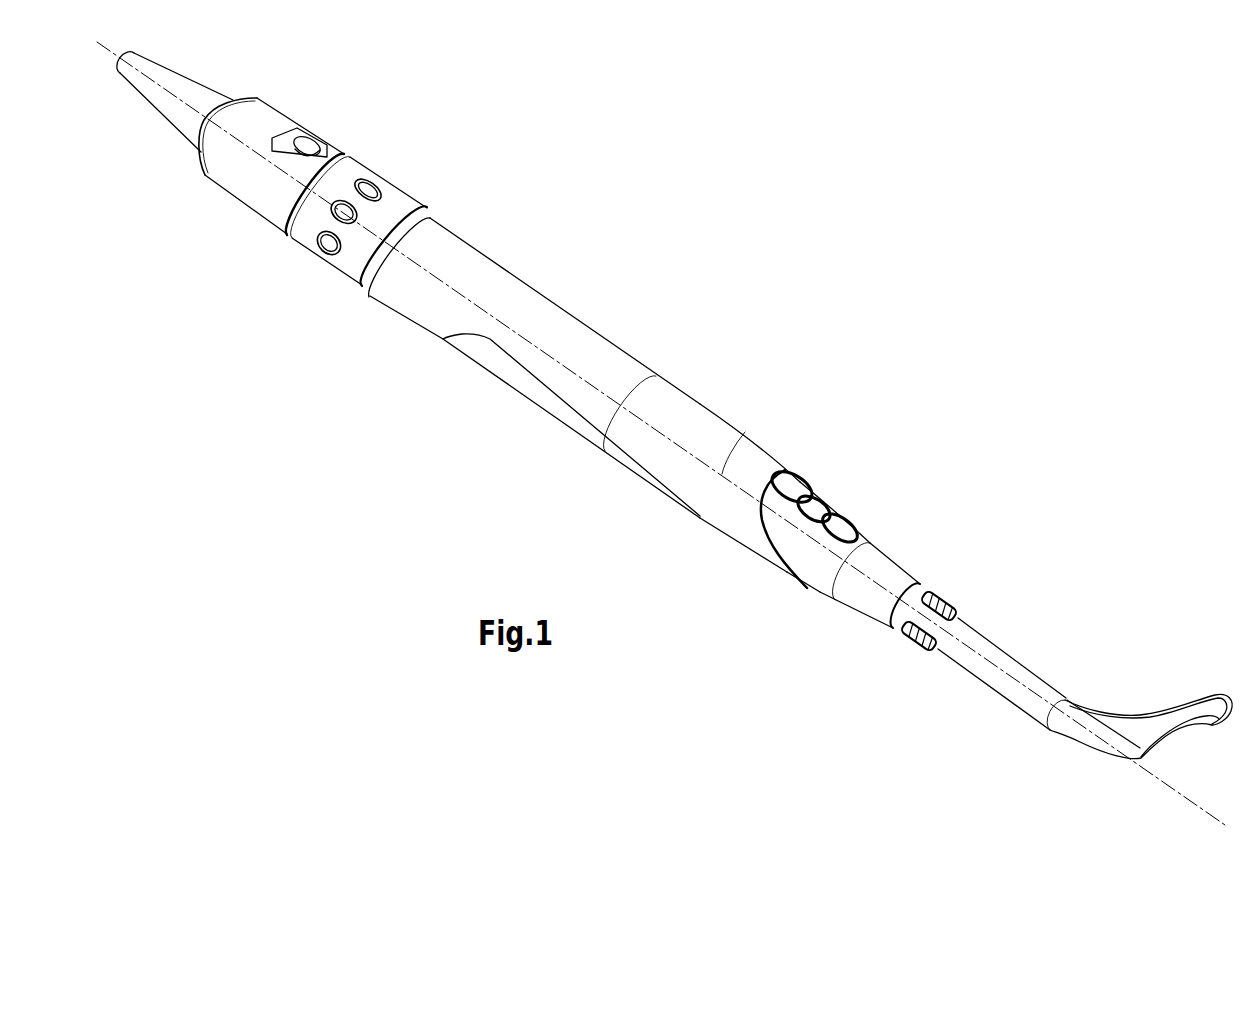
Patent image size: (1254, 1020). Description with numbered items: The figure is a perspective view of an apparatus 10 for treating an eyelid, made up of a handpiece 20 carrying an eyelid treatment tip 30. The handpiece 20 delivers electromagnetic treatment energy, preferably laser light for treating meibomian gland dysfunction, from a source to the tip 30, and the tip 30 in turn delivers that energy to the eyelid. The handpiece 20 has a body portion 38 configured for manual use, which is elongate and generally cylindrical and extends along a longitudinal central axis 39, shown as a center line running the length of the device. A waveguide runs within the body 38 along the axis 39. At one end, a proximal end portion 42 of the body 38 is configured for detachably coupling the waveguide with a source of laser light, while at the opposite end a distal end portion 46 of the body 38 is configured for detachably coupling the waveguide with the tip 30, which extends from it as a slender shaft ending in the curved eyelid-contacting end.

The apparatus 10 is at (358, 363).
The handpiece 20 is at (545, 285).
The tip 30 is at (1024, 651).
The body portion 38 is at (697, 420).
The longitudinal central axis 39 is at (748, 432).
The proximal end portion 42 is at (192, 90).
The distal end portion 46 is at (887, 567).